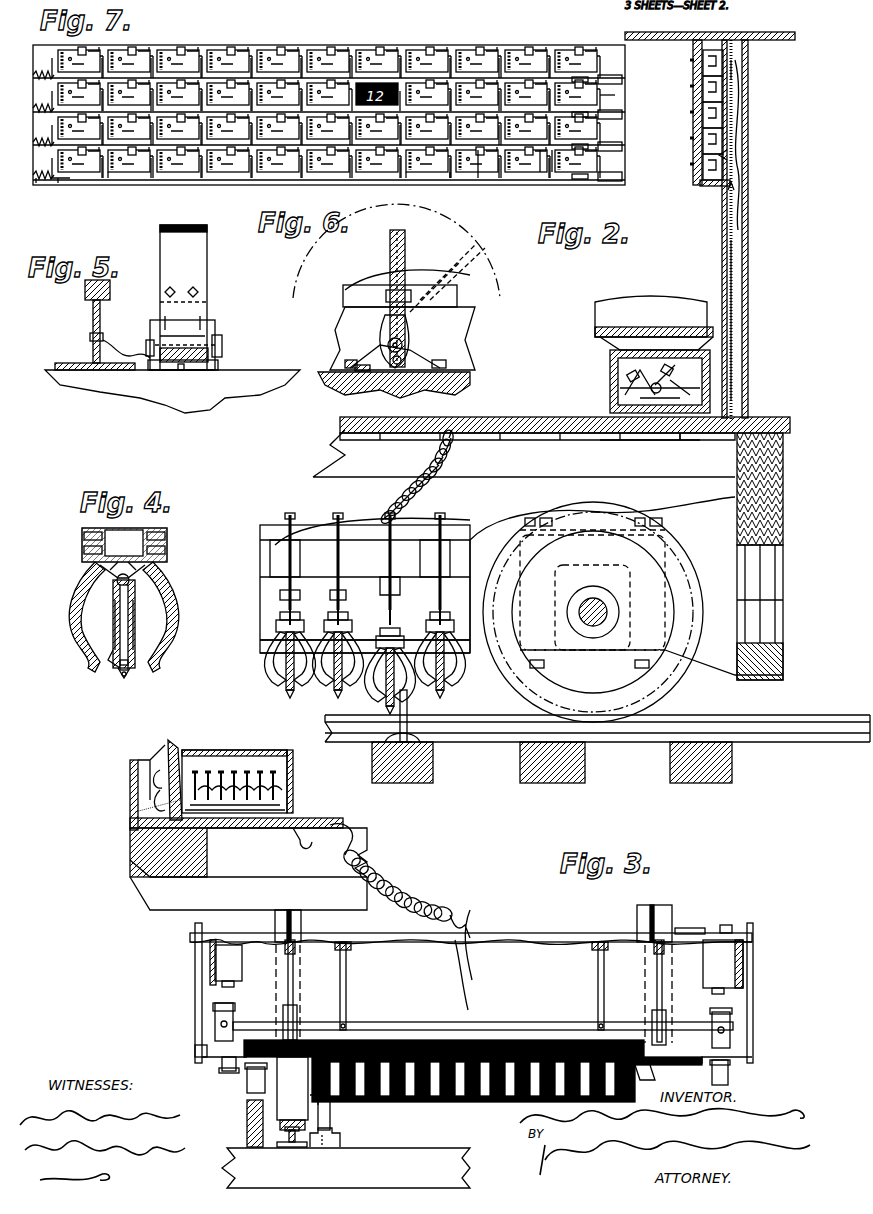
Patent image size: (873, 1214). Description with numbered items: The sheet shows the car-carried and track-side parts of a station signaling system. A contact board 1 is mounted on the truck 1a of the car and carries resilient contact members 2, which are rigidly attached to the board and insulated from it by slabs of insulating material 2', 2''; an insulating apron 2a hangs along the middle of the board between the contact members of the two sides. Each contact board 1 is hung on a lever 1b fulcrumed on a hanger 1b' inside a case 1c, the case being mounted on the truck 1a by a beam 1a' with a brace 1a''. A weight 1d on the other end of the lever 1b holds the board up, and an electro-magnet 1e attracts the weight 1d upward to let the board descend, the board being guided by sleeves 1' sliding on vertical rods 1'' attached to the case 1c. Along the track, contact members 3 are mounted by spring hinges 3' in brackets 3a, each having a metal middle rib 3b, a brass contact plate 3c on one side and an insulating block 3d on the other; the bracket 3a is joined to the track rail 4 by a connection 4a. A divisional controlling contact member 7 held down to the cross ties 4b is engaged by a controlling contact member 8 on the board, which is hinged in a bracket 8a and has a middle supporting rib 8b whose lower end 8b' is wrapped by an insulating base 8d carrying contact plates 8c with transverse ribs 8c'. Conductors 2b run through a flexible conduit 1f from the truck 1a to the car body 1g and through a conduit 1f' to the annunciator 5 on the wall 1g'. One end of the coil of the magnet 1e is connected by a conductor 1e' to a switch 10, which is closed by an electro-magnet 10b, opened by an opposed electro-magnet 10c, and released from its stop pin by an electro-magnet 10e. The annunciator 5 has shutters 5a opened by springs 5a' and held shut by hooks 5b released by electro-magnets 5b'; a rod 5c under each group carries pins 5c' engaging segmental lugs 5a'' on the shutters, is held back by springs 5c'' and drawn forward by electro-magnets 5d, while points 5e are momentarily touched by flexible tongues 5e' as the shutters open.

In FIG. 2, the contact board 1 is at (334, 622).
In FIG. 4, the contact board 1 is at (104, 545).
In FIG. 3, the contact board 1 is at (444, 1030).
In FIG. 2, the sleeve 1' is at (503, 612).
In FIG. 3, the sleeve 1' is at (489, 992).
In FIG. 2, the vertical rod 1'' is at (389, 546).
In FIG. 3, the vertical rod 1'' is at (488, 992).
In FIG. 2, the truck 1a is at (626, 556).
In FIG. 2, the beam 1a' is at (379, 675).
In FIG. 3, the beam 1a' is at (458, 998).
In FIG. 2, the brace 1a'' is at (403, 518).
In FIG. 3, the brace 1a'' is at (460, 934).
In FIG. 2, the lever 1b is at (334, 629).
In FIG. 3, the lever 1b is at (483, 1013).
In FIG. 2, the hanger 1b' is at (327, 571).
In FIG. 3, the hanger 1b' is at (471, 986).
In FIG. 2, the case 1c is at (460, 540).
In FIG. 3, the case 1c is at (195, 1035).
In FIG. 2, the weight 1d is at (298, 598).
In FIG. 3, the weight 1d is at (218, 1010).
In FIG. 2, the electro-magnet 1e is at (344, 568).
In FIG. 3, the electro-magnet 1e is at (460, 959).
In FIG. 3, the conductor 1e' is at (458, 935).
In FIG. 2, the flexible conduit 1f is at (417, 477).
In FIG. 3, the flexible conduit 1f is at (382, 917).
In FIG. 2, the conduit 1f' is at (753, 291).
In FIG. 2, the car body 1g is at (565, 416).
In FIG. 3, the car body 1g is at (250, 866).
In FIG. 2, the wall 1g' is at (757, 70).
In FIG. 2, the contact member 2 is at (353, 667).
In FIG. 4, the contact member 2 is at (115, 617).
In FIG. 3, the contact member 2 is at (507, 1095).
In FIG. 4, the slab of insulating material 2' is at (119, 524).
In FIG. 4, the slab of insulating material 2'' is at (128, 529).
In FIG. 2, the apron 2a is at (298, 700).
In FIG. 4, the apron 2a is at (110, 570).
In FIG. 3, the apron 2a is at (392, 1103).
In FIG. 2, the conductor 2b is at (738, 130).
In FIG. 2, the track contact member 3 is at (374, 734).
In FIG. 5, the track contact member 3 is at (200, 334).
In FIG. 6, the track contact member 3 is at (394, 307).
In FIG. 3, the track contact member 3 is at (336, 1112).
In FIG. 5, the spring hinge 3' is at (193, 383).
In FIG. 6, the spring hinge 3' is at (392, 355).
In FIG. 3, the spring hinge 3' is at (339, 1159).
In FIG. 2, the bracket 3a is at (425, 735).
In FIG. 5, the bracket 3a is at (218, 358).
In FIG. 6, the bracket 3a is at (410, 350).
In FIG. 3, the bracket 3a is at (340, 1140).
In FIG. 5, the middle rib 3b is at (210, 335).
In FIG. 6, the middle rib 3b is at (388, 265).
In FIG. 5, the contact plate 3c is at (190, 262).
In FIG. 6, the contact plate 3c is at (340, 285).
In FIG. 5, the insulating block 3d is at (190, 228).
In FIG. 6, the insulating block 3d is at (410, 265).
In FIG. 2, the track rail 4 is at (625, 750).
In FIG. 5, the track rail 4 is at (85, 295).
In FIG. 6, the track rail 4 is at (460, 355).
In FIG. 3, the track rail 4 is at (292, 1148).
In FIG. 5, the connection 4a is at (110, 345).
In FIG. 5, the cross tie 4b is at (92, 378).
In FIG. 6, the cross tie 4b is at (480, 380).
In FIG. 3, the cross tie 4b is at (346, 1168).
In FIG. 7, the annunciator 5 is at (612, 100).
In FIG. 7, the shutter 5a is at (326, 131).
In FIG. 7, the spring 5a' is at (422, 189).
In FIG. 7, the segmental lug 5a'' is at (460, 190).
In FIG. 7, the hook 5b is at (492, 180).
In FIG. 2, the hook 5b is at (683, 122).
In FIG. 2, the electro-magnet 5b' is at (752, 160).
In FIG. 7, the rod 5c is at (354, 128).
In FIG. 7, the pin 5c' is at (130, 191).
In FIG. 7, the spring 5c'' is at (53, 197).
In FIG. 7, the electro-magnet 5d is at (622, 80).
In FIG. 7, the point 5e is at (528, 183).
In FIG. 7, the flexible tongue 5e' is at (558, 180).
In FIG. 3, the divisional controlling contact member 7 is at (247, 1118).
In FIG. 2, the controlling contact member 8 is at (282, 688).
In FIG. 4, the controlling contact member 8 is at (110, 618).
In FIG. 3, the controlling contact member 8 is at (247, 1080).
In FIG. 4, the bracket 8a is at (133, 572).
In FIG. 4, the middle supporting rib 8b is at (100, 692).
In FIG. 4, the lower end 8b' is at (94, 713).
In FIG. 4, the contact plate 8c is at (95, 637).
In FIG. 4, the transverse rib 8c' is at (115, 677).
In FIG. 4, the insulating base 8d is at (128, 672).
In FIG. 2, the electro-magnetically controlled switch 10 is at (665, 362).
In FIG. 3, the electro-magnetically controlled switch 10 is at (280, 780).
In FIG. 2, the electro-magnet 10b is at (684, 437).
In FIG. 3, the electro-magnet 10b is at (245, 748).
In FIG. 2, the electro-magnet 10c is at (620, 392).
In FIG. 2, the electro-magnet 10e is at (650, 440).